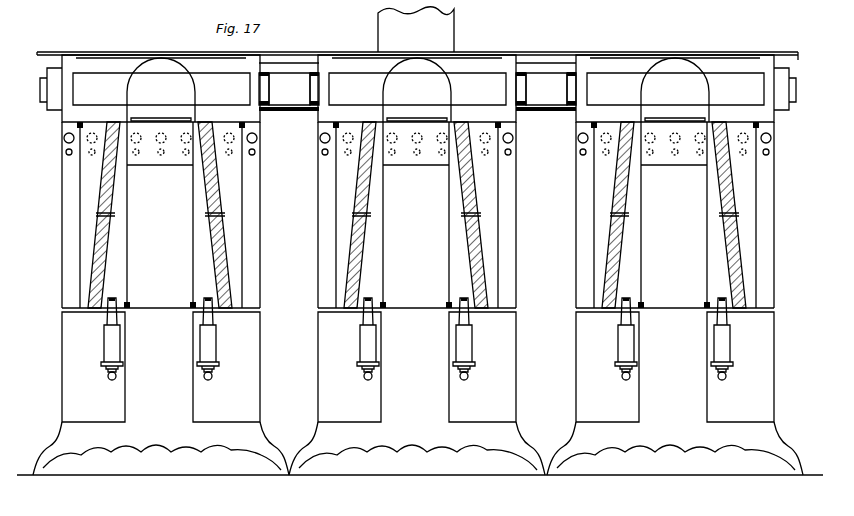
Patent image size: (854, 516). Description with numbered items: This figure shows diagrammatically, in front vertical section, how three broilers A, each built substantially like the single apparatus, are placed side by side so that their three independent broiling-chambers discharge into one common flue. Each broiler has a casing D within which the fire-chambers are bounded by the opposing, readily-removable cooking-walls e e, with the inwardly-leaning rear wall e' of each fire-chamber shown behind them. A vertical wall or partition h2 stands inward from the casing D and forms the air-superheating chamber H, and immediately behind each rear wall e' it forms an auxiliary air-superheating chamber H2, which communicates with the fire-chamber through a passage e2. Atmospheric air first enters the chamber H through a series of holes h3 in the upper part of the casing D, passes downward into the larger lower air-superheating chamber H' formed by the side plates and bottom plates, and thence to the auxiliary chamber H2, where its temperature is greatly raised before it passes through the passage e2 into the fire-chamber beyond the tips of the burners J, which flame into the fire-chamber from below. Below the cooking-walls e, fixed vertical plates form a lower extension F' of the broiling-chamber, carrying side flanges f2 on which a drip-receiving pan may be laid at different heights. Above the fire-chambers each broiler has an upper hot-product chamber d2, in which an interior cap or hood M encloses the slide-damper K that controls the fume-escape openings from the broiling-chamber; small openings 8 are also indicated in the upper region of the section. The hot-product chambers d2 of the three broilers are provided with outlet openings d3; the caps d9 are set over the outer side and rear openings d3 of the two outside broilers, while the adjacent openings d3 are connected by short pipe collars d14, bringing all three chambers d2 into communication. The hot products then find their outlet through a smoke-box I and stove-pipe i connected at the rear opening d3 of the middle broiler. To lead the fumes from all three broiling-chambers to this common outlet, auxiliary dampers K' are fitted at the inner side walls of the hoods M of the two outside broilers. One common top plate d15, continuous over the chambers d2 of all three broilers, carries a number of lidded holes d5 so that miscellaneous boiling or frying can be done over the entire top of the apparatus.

The holes d5 is at (228, 44).
The common top plate d15 is at (609, 44).
The stove-pipe i is at (416, 29).
The caps d9 is at (46, 82).
The hot-product chamber d2 is at (194, 72).
The outlet opening d3 is at (420, 87).
The short pipe collars d14 is at (418, 89).
The interior cap or hood M is at (180, 68).
The slide-damper K is at (418, 111).
The auxiliary dampers K' is at (418, 94).
The outlet-box I is at (417, 89).
The openings 8 is at (193, 222).
The holes h3 is at (66, 152).
The vertical wall or partition h2 is at (80, 172).
The auxiliary air-superheating chamber H2 is at (414, 189).
The cooking-walls e is at (417, 215).
The passage e2 is at (416, 222).
The inclined column E' is at (417, 215).
The rear wall e' is at (414, 272).
The air-superheating chamber H is at (418, 215).
The casing D is at (62, 234).
The lower extension of broiling-chamber F' is at (411, 271).
The broiler A is at (418, 318).
The burners J is at (104, 345).
The flanges f2 is at (197, 365).
The lower air-superheating chamber H' is at (418, 367).